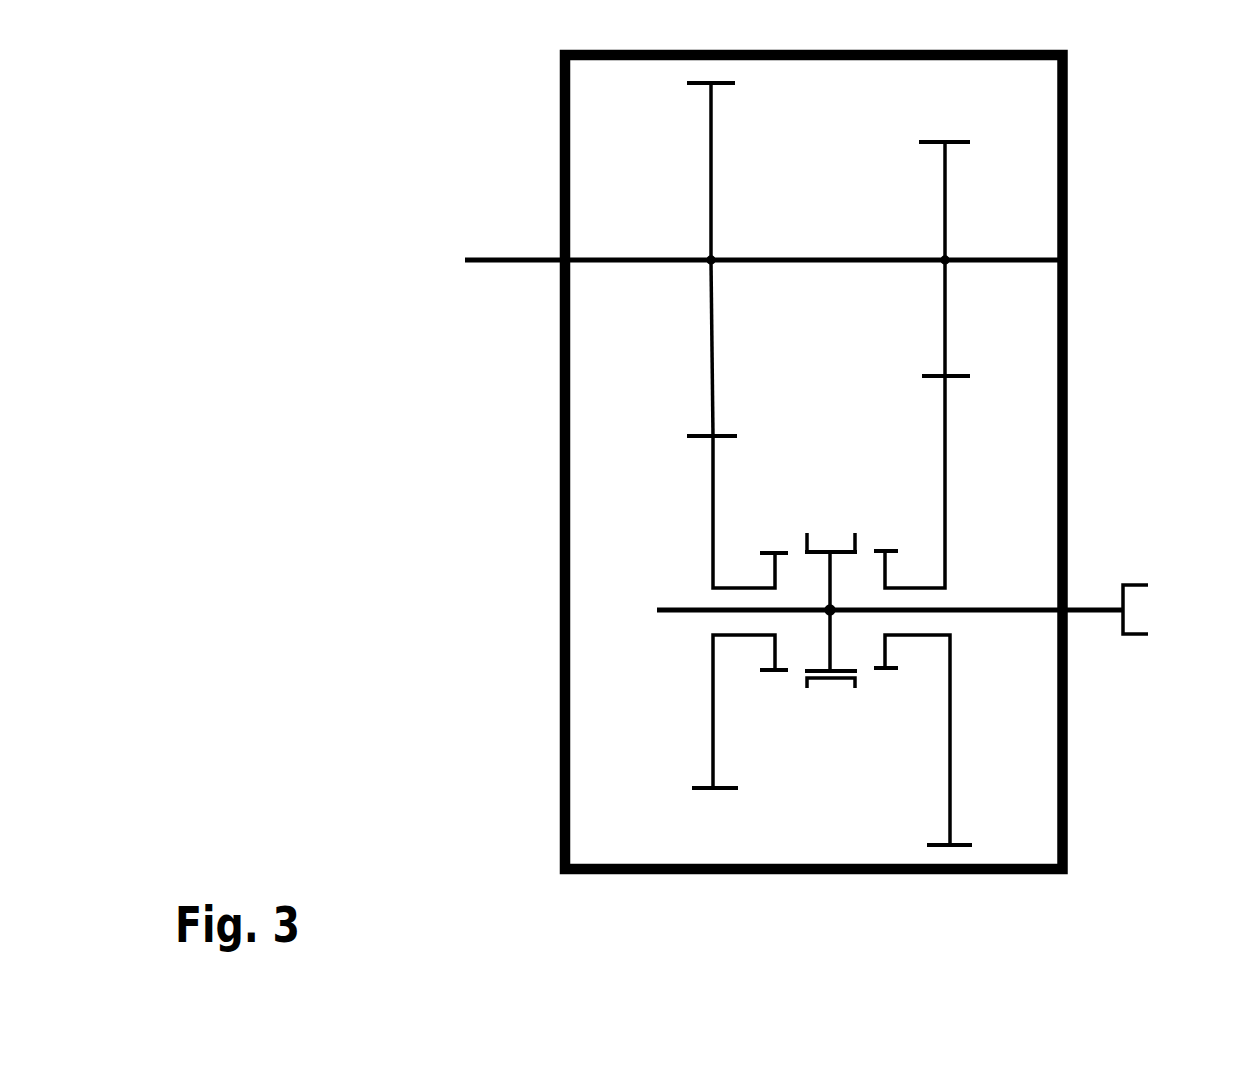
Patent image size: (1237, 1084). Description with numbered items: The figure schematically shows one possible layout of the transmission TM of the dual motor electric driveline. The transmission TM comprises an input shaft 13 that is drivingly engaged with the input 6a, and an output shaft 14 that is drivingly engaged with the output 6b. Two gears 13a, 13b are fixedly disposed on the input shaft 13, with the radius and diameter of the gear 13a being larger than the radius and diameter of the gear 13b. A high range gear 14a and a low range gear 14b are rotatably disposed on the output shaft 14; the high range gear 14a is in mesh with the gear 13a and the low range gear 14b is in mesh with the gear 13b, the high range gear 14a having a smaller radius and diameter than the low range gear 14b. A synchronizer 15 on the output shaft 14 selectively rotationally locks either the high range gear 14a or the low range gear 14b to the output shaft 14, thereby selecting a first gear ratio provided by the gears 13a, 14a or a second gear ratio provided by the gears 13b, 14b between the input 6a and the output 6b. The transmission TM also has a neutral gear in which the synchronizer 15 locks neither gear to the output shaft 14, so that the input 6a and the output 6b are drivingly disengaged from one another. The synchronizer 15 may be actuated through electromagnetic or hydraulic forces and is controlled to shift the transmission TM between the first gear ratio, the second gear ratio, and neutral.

The transmission TM is at (1070, 171).
The input 6a is at (530, 263).
The output 6b is at (1097, 613).
The input shaft 13 is at (803, 253).
The gear 13a is at (707, 120).
The gear 13b is at (947, 227).
The output shaft 14 is at (987, 613).
The high range gear 14a is at (708, 472).
The low range gear 14b is at (945, 495).
The synchronizer 15 is at (807, 512).